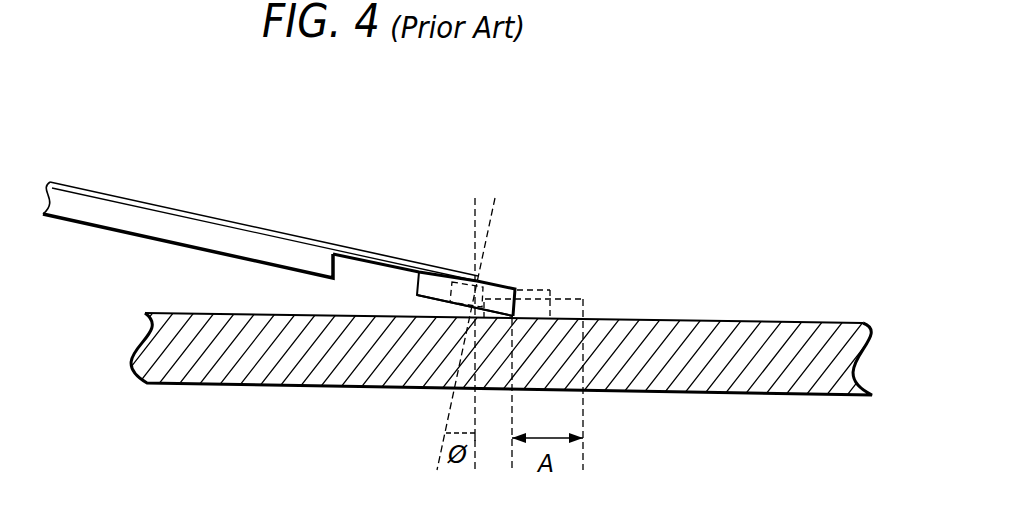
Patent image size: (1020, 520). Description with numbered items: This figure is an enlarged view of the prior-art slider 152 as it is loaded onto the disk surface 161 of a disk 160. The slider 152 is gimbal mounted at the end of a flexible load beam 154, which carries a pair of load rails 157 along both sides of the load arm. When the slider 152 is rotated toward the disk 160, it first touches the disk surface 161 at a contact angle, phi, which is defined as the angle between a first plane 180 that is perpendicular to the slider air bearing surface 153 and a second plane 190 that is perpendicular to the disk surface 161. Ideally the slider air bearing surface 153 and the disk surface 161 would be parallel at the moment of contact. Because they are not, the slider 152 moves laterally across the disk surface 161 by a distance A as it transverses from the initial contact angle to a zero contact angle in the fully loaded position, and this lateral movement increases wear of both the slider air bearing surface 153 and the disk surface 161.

The slider 152 is at (415, 279).
The slider air bearing surface 153 is at (418, 299).
The load beam 154 is at (172, 206).
The load rails 157 is at (103, 227).
The disk 160 is at (864, 365).
The disk surface 161 is at (827, 321).
The first plane 180 is at (490, 226).
The second plane 190 is at (472, 220).